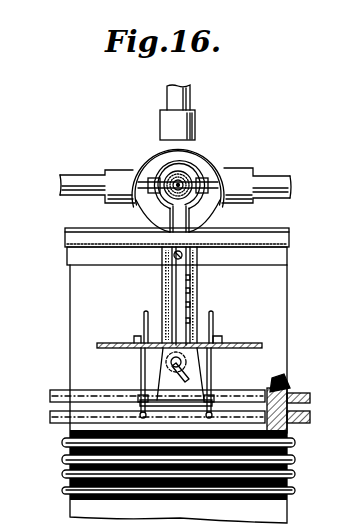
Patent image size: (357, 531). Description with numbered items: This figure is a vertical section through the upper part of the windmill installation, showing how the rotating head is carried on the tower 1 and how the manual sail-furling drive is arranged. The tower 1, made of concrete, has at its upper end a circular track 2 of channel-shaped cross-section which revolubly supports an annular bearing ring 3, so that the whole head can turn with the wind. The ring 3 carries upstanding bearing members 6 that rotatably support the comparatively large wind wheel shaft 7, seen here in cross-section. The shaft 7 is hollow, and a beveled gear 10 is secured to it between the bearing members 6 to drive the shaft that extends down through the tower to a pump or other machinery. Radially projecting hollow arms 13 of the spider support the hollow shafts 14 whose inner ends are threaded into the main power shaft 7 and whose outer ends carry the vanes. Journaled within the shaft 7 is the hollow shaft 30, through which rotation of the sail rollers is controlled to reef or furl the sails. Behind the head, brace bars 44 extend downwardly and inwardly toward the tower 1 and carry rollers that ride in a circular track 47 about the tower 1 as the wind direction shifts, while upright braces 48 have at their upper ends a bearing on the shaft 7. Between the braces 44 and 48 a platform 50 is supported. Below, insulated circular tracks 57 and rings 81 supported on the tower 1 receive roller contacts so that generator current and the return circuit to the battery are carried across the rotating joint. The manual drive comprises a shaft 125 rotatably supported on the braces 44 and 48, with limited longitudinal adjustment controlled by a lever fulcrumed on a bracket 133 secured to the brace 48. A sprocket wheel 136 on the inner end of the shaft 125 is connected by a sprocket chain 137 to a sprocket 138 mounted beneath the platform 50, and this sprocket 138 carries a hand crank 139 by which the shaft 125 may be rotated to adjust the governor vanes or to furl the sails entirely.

The tower 1 is at (84, 290).
The circular track 2 is at (66, 240).
The annular bearing ring 3 is at (70, 229).
The bearing members 6 is at (214, 210).
The wind wheel shaft 7 is at (172, 172).
The beveled gear 10 is at (212, 158).
The hollow arms 13 is at (186, 127).
The hollow shafts 14 is at (190, 97).
The hollow shaft 30 is at (168, 196).
The brace bars 44 is at (144, 324).
The circular track 47 is at (306, 392).
The upright braces 48 is at (197, 290).
The platform 50 is at (261, 343).
The circular tracks 57 is at (62, 490).
The rings 81 is at (62, 459).
The shaft 125 is at (183, 256).
The bracket 133 is at (191, 302).
The sprocket wheel 136 is at (162, 255).
The sprocket chain 137 is at (165, 286).
The sprocket 138 is at (167, 363).
The hand crank 139 is at (184, 370).